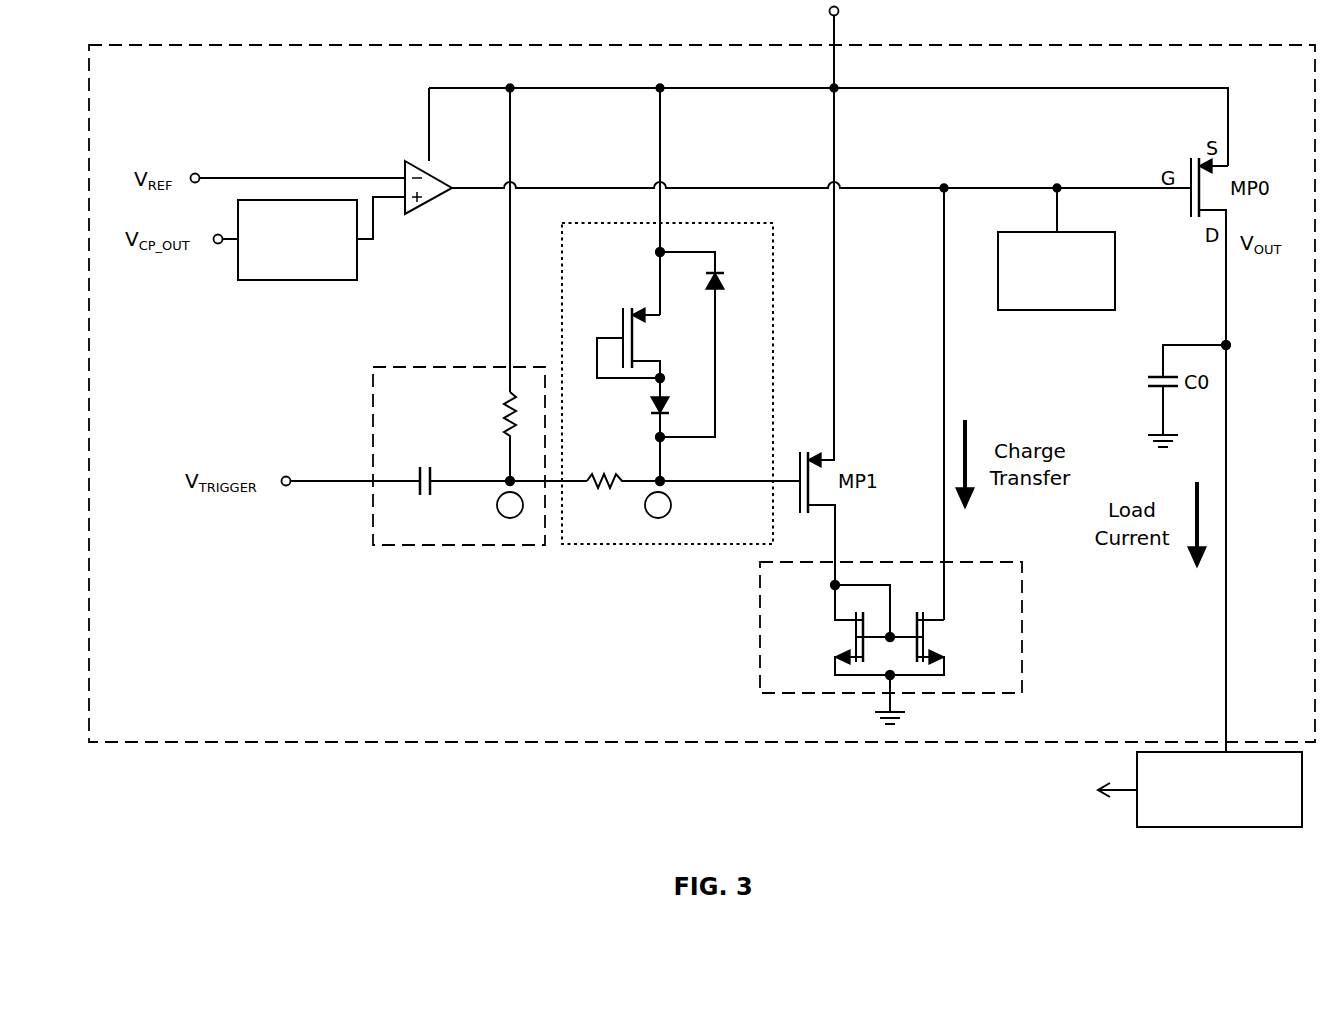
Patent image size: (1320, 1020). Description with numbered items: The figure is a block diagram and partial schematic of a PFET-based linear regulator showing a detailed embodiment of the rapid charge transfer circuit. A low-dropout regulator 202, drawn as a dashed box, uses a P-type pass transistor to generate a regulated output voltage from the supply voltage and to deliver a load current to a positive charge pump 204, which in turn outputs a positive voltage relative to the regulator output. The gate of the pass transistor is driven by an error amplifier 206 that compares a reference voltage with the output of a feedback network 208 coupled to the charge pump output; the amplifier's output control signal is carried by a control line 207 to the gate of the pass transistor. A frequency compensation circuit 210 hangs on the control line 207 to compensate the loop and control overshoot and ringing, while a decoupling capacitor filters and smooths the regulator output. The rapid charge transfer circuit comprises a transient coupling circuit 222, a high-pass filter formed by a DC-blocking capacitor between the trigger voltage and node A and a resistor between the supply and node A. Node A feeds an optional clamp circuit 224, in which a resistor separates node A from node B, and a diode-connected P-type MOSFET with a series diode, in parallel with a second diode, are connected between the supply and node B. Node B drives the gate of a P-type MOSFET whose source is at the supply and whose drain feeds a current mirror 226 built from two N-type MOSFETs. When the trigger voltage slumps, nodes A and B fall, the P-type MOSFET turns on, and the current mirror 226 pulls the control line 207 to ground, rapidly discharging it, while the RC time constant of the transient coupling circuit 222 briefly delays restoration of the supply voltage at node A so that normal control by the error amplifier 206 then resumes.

The low-dropout regulator 202 is at (178, 742).
The positive charge pump 204 is at (1137, 827).
The error amplifier 206 is at (428, 205).
The control line 207 is at (735, 188).
The feedback network 208 is at (300, 280).
The frequency compensation circuit 210 is at (1055, 310).
The transient coupling circuit 222 is at (456, 545).
The clamp circuit 224 is at (668, 544).
The current mirror 226 is at (760, 636).